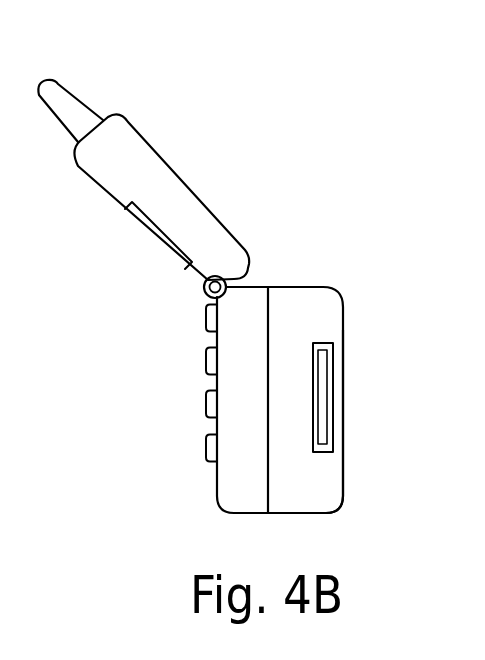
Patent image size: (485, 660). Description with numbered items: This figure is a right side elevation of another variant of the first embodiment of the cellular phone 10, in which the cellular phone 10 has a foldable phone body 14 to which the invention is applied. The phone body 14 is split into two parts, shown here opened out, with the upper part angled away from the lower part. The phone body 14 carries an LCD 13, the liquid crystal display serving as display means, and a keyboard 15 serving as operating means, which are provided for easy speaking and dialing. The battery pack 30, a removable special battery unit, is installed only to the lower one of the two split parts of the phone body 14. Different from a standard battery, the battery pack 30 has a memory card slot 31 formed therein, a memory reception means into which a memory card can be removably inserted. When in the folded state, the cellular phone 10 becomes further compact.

The cellular phone 10 is at (352, 156).
The LCD 13 is at (146, 236).
The phone body 14 is at (167, 165).
The keyboard 15 is at (207, 313).
The battery pack 30 is at (323, 485).
The memory card slot 31 is at (321, 383).